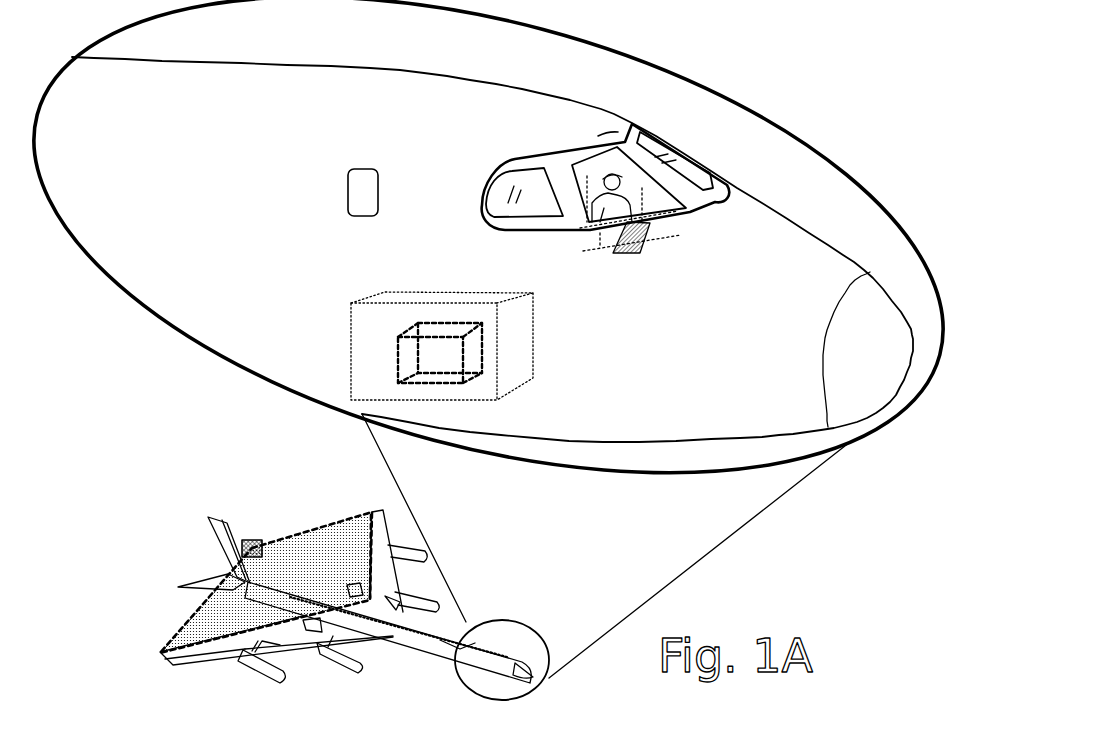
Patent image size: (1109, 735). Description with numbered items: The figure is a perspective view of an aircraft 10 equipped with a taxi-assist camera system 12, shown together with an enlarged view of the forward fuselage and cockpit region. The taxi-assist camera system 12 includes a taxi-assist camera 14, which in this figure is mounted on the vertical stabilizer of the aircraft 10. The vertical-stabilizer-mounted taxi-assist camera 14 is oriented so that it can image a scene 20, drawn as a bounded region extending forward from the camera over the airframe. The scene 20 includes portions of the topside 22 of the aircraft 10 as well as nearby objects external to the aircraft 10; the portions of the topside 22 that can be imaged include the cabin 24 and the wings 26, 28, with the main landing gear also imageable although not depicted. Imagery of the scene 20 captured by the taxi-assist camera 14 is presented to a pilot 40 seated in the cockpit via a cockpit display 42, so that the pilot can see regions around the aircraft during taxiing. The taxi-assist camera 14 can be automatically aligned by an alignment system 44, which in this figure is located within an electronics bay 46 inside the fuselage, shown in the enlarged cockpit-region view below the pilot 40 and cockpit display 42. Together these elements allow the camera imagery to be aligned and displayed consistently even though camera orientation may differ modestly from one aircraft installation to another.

The aircraft 10 is at (488, 602).
The taxi-assist camera system 12 is at (553, 353).
The taxi-assist camera 14 is at (252, 538).
The scene 20 is at (213, 608).
The topside 22 is at (376, 601).
The cabin 24 is at (448, 640).
The wing 26 is at (297, 630).
The wing 28 is at (372, 603).
The pilot 40 is at (601, 166).
The cockpit display 42 is at (633, 250).
The alignment system 44 is at (437, 353).
The electronics bay 46 is at (445, 292).